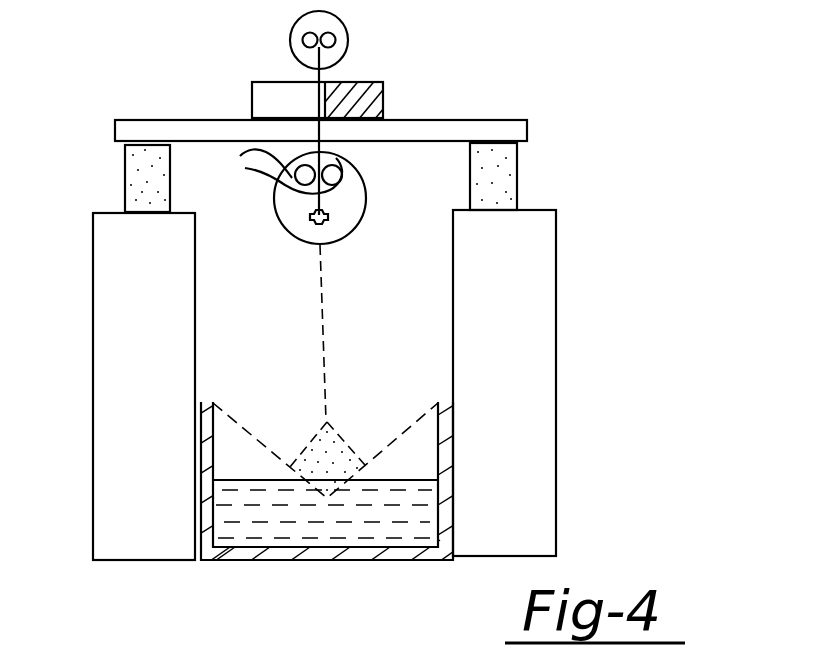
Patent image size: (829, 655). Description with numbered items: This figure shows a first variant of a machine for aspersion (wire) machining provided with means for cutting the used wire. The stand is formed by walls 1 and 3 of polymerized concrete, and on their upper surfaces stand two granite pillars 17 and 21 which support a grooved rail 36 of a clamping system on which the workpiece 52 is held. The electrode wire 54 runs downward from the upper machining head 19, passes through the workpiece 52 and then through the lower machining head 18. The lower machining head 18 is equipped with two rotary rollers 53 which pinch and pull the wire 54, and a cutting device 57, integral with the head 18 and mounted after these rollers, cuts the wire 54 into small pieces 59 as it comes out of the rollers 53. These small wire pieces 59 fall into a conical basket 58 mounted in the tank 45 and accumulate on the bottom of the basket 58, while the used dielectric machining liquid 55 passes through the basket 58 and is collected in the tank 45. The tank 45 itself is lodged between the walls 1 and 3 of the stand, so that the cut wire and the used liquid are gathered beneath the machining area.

The wall 1 is at (113, 330).
The wall 3 is at (520, 297).
The granite pillar 17 is at (137, 187).
The lower machining head 18 is at (353, 177).
The upper machining head 19 is at (342, 38).
The granite pillar 21 is at (493, 170).
The grooved rail 36 is at (132, 135).
The tank 45 is at (458, 525).
The workpiece 52 is at (383, 103).
The rotary rollers 53 is at (271, 171).
The wire 54 is at (322, 77).
The used dielectric machining liquid 55 is at (413, 520).
The cutting device 57 is at (330, 227).
The conical basket 58 is at (455, 412).
The small wire pieces 59 is at (340, 458).